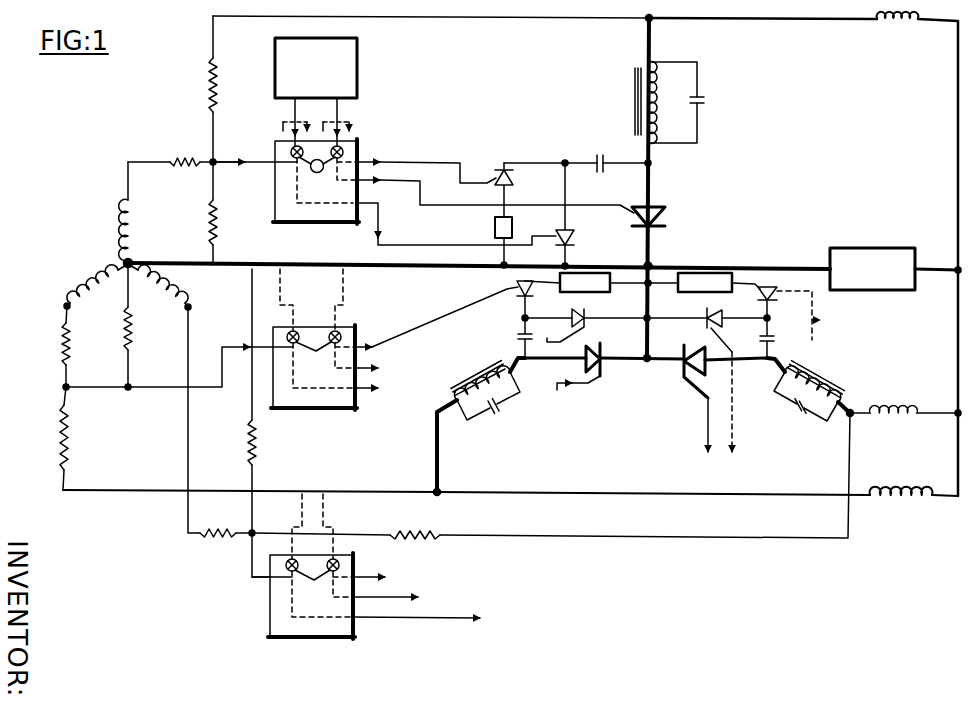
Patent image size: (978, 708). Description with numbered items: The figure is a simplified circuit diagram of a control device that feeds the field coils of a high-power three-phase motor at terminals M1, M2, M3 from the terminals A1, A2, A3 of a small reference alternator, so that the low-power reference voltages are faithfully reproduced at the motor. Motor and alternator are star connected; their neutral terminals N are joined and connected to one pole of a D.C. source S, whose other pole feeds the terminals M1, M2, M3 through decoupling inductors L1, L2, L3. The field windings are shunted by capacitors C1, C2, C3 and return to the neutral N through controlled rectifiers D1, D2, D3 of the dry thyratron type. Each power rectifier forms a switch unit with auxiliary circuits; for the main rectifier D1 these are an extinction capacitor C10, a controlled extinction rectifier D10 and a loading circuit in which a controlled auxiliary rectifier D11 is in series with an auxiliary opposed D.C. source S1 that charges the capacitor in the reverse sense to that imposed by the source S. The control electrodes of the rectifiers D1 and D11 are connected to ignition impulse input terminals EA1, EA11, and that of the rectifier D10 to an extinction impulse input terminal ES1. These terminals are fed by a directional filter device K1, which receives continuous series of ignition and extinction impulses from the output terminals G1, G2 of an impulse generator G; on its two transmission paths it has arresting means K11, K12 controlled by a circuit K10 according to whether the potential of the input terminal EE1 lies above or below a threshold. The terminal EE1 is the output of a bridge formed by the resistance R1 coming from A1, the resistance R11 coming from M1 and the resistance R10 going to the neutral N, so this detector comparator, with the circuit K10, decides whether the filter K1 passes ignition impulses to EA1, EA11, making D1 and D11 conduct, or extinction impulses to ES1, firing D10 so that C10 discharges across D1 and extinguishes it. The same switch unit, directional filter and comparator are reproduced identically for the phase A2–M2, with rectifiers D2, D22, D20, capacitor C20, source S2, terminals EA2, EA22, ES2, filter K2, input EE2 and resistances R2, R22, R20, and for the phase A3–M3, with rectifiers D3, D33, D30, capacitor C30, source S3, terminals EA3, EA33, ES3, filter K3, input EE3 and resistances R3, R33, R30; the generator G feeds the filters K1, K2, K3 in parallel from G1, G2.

The neutral terminals N is at (132, 262).
The resistance R11 is at (230, 85).
The resistance R10 is at (230, 222).
The resistance R1 is at (185, 148).
The alternator terminal A1 is at (128, 197).
The input terminal EE1 is at (238, 150).
The impulse generator G is at (316, 68).
The output terminal of the impulse generator G1 is at (287, 122).
The output terminal of the impulse generator G2 is at (346, 122).
The directional filter device K1 is at (310, 212).
The arresting means K11 is at (288, 146).
The arresting means K12 is at (345, 152).
The circuit K10 is at (316, 173).
The ignition impulse input terminal EA11 is at (434, 162).
The ignition impulse input terminal EA1 is at (440, 205).
The extinction impulse input terminal ES1 is at (428, 245).
The controlled auxiliary rectifier D11 is at (522, 190).
The auxiliary opposed D.C. source S1 is at (514, 240).
The controlled extinction rectifier D10 is at (569, 238).
The extinction capacitor C10 is at (599, 151).
The controlled rectifier D1 is at (664, 212).
The field coil terminal of the motor M1 is at (648, 41).
The capacitor C1 is at (701, 101).
The decoupling inductor L1 is at (898, 31).
The source of D.C. power S is at (872, 269).
The voltage source S2 is at (605, 292).
The voltage source S3 is at (726, 292).
The thyristor D22 is at (531, 292).
The capacitor C20 is at (517, 338).
The thyristor D20 is at (585, 323).
The thyristor D30 is at (723, 325).
The thyristor D33 is at (764, 286).
The capacitor C30 is at (772, 333).
The controlled rectifier D2 is at (601, 368).
The controlled rectifier D3 is at (682, 371).
The trigger signal EA22 is at (389, 340).
The trigger signal EA2 is at (465, 390).
The blocking signal ES2 is at (463, 368).
The directional filter device K2 is at (316, 410).
The input signal EE2 is at (150, 385).
The field coil terminal of the motor M2 is at (437, 466).
The capacitor C2 is at (497, 412).
The field coil terminal of the motor M3 is at (847, 416).
The capacitor C3 is at (797, 412).
The decoupling inductor L3 is at (894, 396).
The decoupling inductor L2 is at (900, 478).
The trigger signal EA3 is at (706, 442).
The blocking signal ES3 is at (733, 446).
The trigger signal EA33 is at (606, 441).
The alternator terminal A2 is at (75, 292).
The alternator terminal A3 is at (179, 293).
The resistor R2 is at (62, 332).
The resistor R20 is at (144, 328).
The resistor R22 is at (76, 433).
The resistor R30 is at (250, 437).
The resistor R3 is at (220, 531).
The resistor R33 is at (415, 533).
The input signal EE3 is at (250, 573).
The directional filter device K3 is at (328, 632).